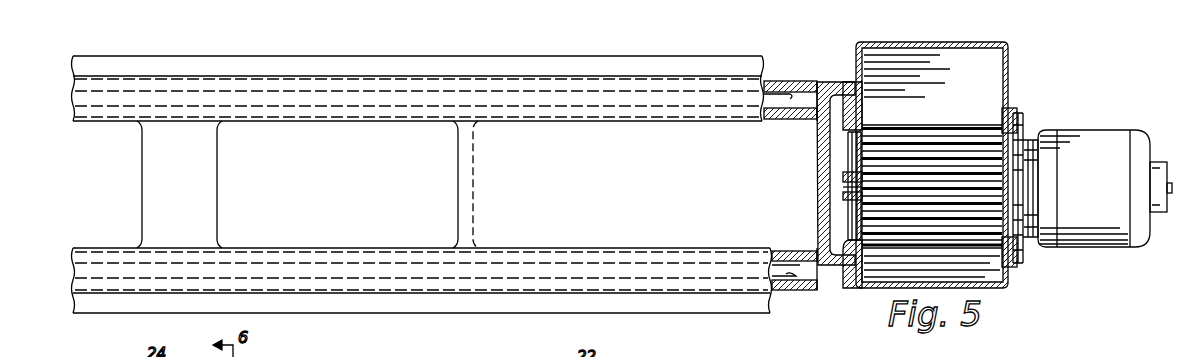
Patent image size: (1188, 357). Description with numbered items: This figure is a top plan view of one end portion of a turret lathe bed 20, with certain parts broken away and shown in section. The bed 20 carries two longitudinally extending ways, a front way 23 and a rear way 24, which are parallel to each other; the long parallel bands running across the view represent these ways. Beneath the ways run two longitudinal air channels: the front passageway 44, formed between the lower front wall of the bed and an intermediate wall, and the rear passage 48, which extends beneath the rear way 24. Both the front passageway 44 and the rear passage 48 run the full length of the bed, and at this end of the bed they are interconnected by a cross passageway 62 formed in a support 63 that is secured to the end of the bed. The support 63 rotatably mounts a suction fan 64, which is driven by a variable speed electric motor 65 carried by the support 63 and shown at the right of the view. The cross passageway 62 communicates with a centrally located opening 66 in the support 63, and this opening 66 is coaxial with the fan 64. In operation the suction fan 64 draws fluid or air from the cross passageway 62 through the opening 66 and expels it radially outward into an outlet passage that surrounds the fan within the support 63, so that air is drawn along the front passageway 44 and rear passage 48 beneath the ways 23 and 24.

The bed 20 is at (148, 188).
The front way 23 is at (419, 283).
The rear way 24 is at (340, 83).
The front passageway 44 is at (793, 281).
The rear passage 48 is at (790, 78).
The cross passageway 62 is at (834, 219).
The support 63 is at (850, 277).
The suction fan 64 is at (977, 127).
The variable speed electric motor 65 is at (1088, 132).
The centrally located opening 66 is at (850, 152).